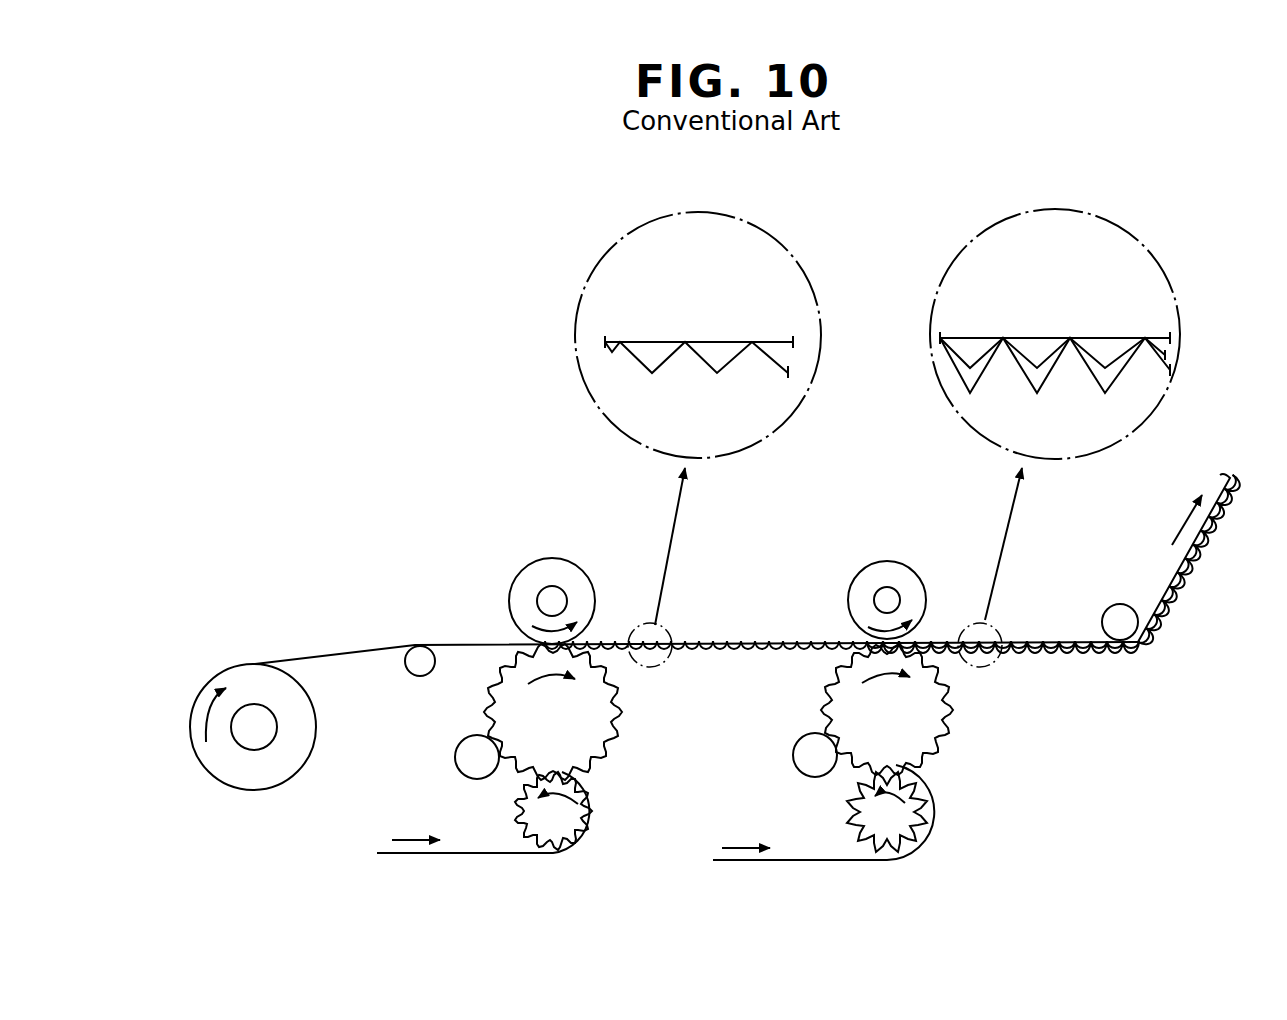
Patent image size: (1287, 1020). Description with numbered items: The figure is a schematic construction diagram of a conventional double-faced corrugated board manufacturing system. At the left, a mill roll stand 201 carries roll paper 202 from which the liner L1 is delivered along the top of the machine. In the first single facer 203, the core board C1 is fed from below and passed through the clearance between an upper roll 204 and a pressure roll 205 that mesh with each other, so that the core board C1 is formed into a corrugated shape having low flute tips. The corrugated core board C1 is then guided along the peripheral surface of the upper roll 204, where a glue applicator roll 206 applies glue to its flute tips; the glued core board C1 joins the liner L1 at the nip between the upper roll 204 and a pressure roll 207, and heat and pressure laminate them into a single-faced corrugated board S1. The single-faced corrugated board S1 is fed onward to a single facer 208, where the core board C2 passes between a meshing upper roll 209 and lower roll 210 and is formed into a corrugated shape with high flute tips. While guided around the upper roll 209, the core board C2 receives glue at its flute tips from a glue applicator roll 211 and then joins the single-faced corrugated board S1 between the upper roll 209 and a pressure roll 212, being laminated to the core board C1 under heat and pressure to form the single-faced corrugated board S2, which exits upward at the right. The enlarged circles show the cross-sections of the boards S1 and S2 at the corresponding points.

The mill roll stand 201 is at (275, 632).
The roll paper 202 is at (316, 722).
The first single facer 203 is at (508, 556).
The upper roll 204 is at (606, 725).
The pressure roll 205 is at (586, 803).
The glue applicator roll 206 is at (456, 766).
The pressure roll 207 is at (578, 565).
The single facer 208 is at (872, 548).
The upper roll 209 is at (932, 722).
The lower roll 210 is at (922, 805).
The glue applicator roll 211 is at (799, 744).
The pressure roll 212 is at (905, 568).
The liner L1 is at (347, 652).
The single-faced corrugated board S1 is at (722, 640).
The single-faced corrugated board S2 is at (1049, 641).
The core board C1 is at (420, 854).
The core board C2 is at (772, 862).